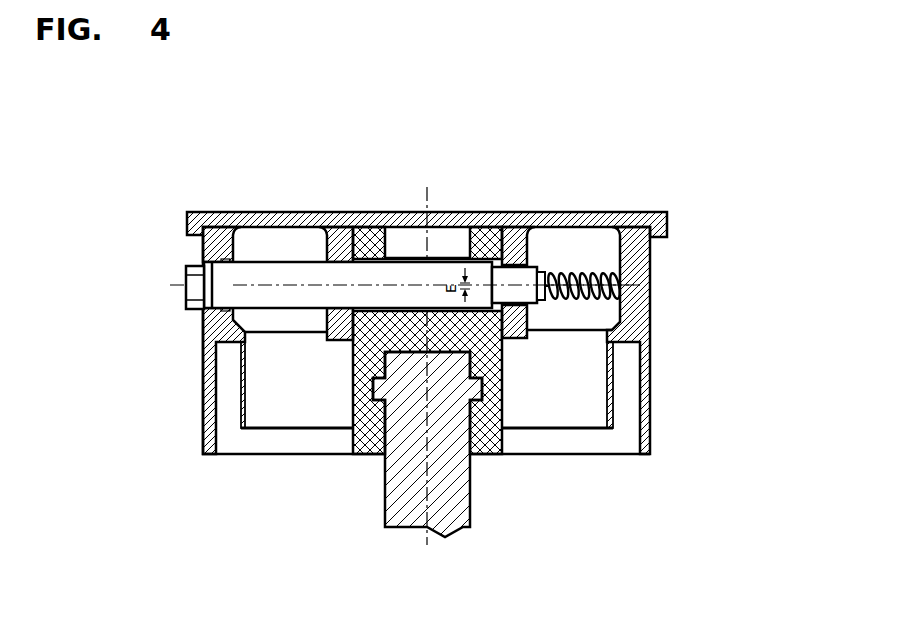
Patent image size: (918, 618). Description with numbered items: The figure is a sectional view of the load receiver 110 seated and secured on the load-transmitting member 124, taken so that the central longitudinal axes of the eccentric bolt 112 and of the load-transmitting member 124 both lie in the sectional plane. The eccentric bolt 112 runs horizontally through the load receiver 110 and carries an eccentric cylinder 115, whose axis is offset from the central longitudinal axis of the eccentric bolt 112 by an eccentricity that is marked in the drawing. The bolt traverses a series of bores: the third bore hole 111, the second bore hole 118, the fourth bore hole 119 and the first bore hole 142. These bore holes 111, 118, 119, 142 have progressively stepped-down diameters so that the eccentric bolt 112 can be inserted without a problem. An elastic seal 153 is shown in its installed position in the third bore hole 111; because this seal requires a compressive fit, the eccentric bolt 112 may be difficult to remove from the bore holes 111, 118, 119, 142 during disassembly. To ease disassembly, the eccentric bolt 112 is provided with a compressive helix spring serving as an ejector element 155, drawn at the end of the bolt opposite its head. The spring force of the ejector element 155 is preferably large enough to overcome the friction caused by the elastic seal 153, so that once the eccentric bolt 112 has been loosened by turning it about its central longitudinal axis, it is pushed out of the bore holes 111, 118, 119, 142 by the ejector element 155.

The load receiver 110 is at (640, 257).
The third bore hole 111 is at (221, 250).
The eccentric bolt 112 is at (197, 283).
The eccentric cylinder 115 is at (443, 272).
The second bore hole 118 is at (337, 250).
The fourth bore hole 119 is at (512, 250).
The load-transmitting member 124 is at (440, 485).
The first bore hole 142 is at (414, 302).
The elastic seal 153 is at (225, 320).
The ejector element 155 is at (573, 275).